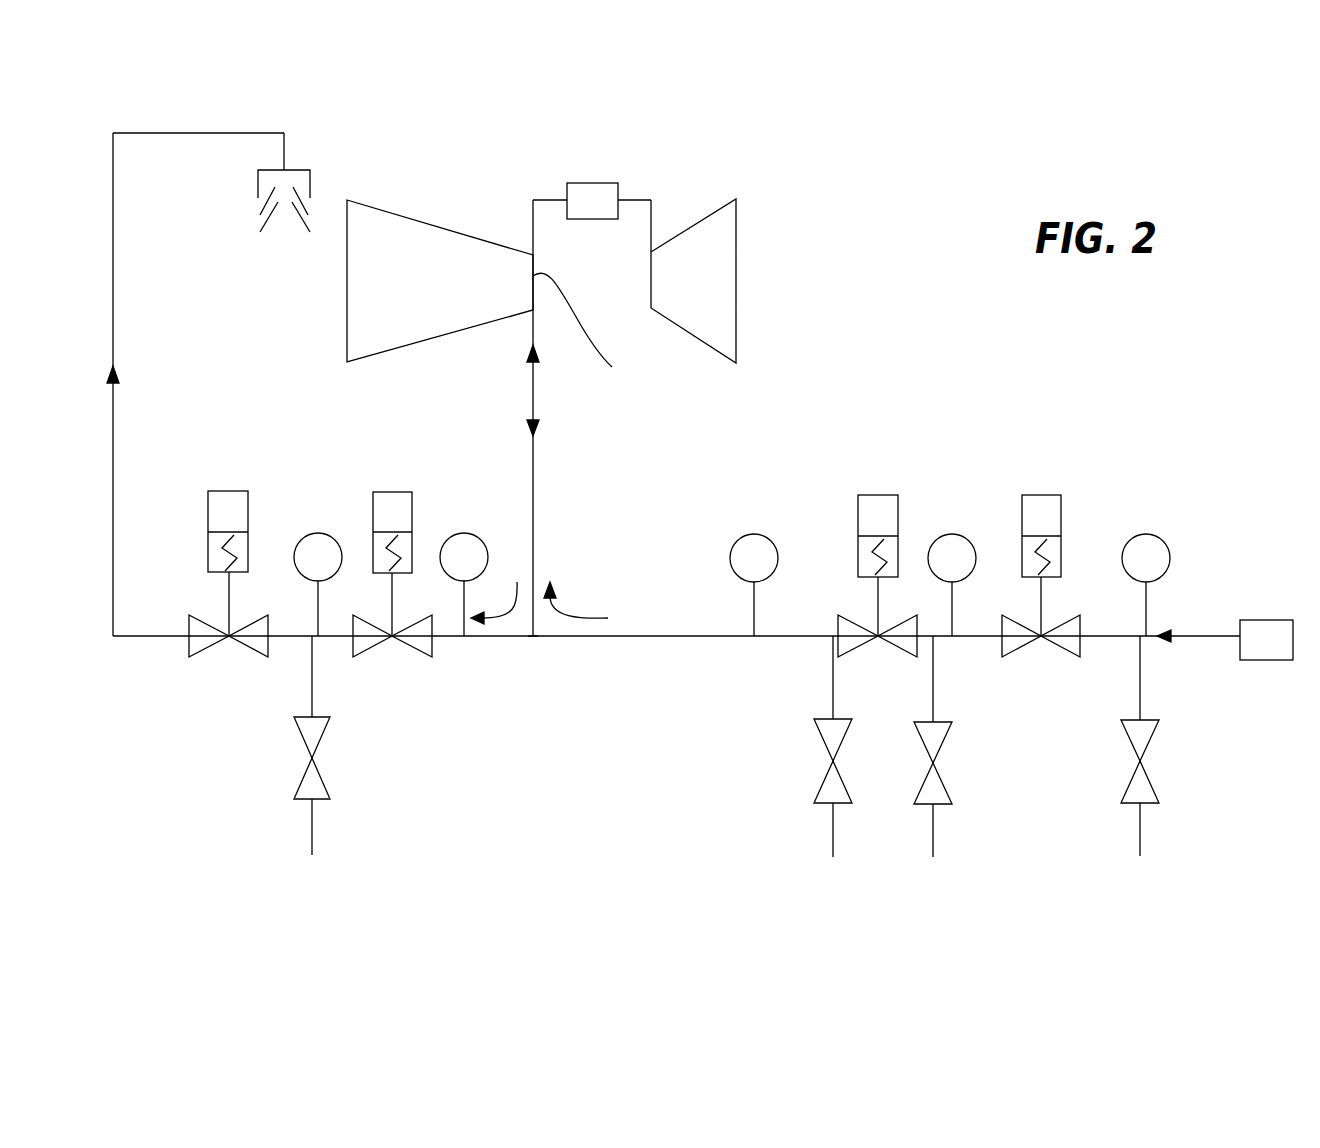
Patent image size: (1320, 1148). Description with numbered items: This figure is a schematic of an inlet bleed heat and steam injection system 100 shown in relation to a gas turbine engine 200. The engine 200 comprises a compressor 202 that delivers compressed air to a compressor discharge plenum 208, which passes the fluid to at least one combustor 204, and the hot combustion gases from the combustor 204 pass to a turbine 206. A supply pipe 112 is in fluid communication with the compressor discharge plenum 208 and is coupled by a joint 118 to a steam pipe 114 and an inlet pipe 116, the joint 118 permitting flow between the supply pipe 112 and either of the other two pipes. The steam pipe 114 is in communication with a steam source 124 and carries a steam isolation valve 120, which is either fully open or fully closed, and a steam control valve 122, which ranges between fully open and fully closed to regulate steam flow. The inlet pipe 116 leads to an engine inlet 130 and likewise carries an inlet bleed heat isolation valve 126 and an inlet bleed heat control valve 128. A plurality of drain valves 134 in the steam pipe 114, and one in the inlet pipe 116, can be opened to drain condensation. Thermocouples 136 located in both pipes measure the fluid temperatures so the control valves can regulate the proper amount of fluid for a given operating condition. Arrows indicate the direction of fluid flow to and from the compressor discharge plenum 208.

The inlet bleed heat and steam injection system 100 is at (704, 826).
The supply pipe 112 is at (533, 486).
The steam pipe 114 is at (650, 634).
The inlet pipe 116 is at (135, 642).
The joint 118 is at (535, 638).
The steam isolation valve 120 is at (847, 632).
The steam control valve 122 is at (1017, 640).
The steam source 124 is at (1257, 625).
The inlet bleed heat isolation valve 126 is at (372, 634).
The inlet bleed heat control valve 128 is at (215, 632).
The engine inlet 130 is at (295, 180).
The drain valve 134 is at (320, 790).
The thermocouple 136 is at (320, 552).
The gas turbine engine 200 is at (641, 167).
The compressor 202 is at (393, 296).
The combustor 204 is at (583, 190).
The turbine 206 is at (668, 294).
The compressor discharge plenum 208 is at (598, 336).